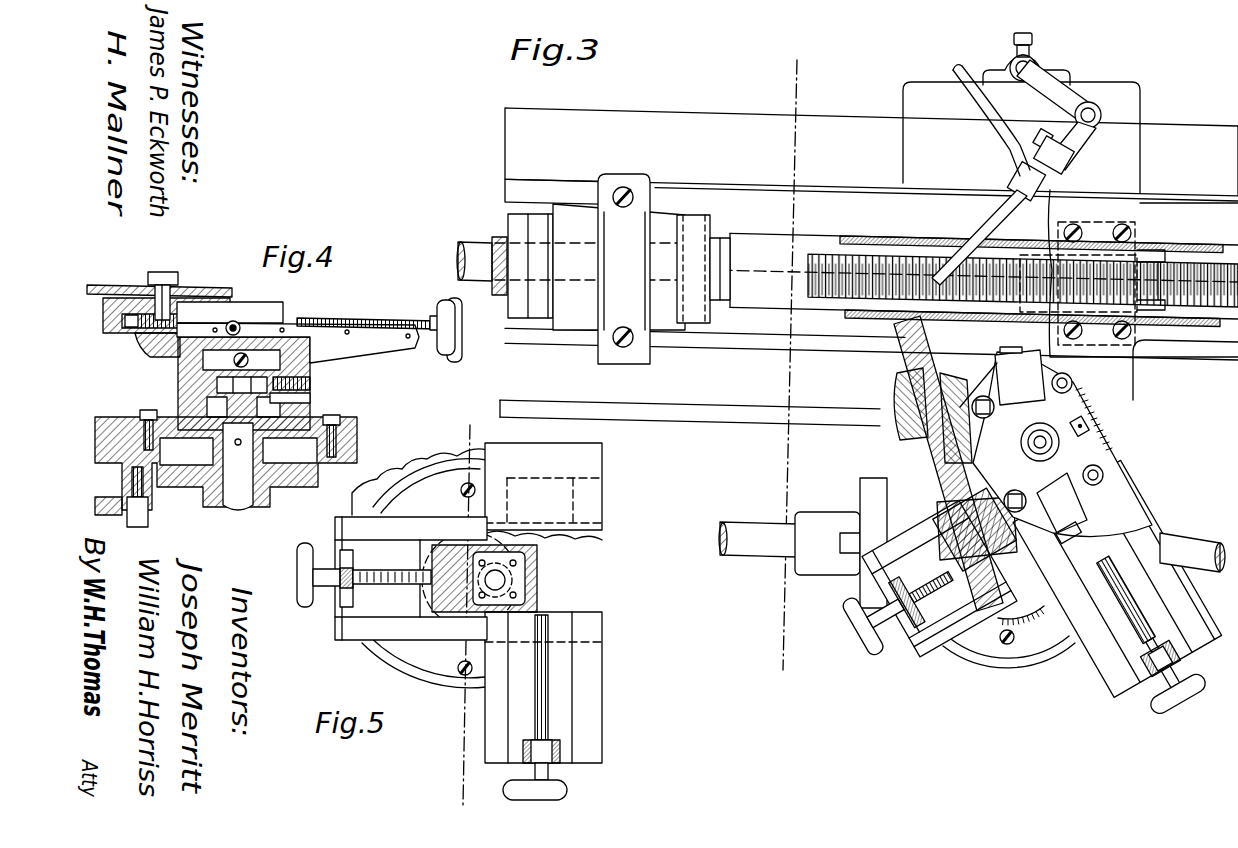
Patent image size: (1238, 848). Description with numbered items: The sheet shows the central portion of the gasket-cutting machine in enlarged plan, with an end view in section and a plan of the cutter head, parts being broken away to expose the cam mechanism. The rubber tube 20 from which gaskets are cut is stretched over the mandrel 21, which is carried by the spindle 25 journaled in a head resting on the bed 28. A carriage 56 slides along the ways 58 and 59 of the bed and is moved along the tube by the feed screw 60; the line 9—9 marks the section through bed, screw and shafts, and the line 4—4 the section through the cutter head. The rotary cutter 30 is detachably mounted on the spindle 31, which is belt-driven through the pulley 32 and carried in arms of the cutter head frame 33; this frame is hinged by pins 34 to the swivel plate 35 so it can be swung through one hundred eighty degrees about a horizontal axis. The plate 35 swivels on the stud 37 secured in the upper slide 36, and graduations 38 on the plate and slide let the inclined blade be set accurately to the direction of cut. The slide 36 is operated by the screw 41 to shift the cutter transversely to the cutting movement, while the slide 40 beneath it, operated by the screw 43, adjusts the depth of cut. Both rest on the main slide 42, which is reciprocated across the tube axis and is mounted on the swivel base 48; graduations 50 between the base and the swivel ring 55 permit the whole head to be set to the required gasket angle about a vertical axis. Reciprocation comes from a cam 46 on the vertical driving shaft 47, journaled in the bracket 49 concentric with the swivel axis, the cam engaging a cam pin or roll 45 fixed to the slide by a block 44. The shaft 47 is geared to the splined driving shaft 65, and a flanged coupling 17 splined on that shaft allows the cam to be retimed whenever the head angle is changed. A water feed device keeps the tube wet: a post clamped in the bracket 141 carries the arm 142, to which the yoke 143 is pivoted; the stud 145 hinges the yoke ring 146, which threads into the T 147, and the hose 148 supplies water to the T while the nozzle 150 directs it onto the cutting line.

In FIG. 3, the section line 9— 9 is at (745, 82).
In FIG. 3, the way 58 is at (871, 156).
In FIG. 3, the way 59 is at (869, 377).
In FIG. 3, the spindle 25 is at (503, 232).
In FIG. 3, the work-supporting spindle or mandrel 21 is at (715, 240).
In FIG. 3, the tube 20 is at (979, 263).
In FIG. 3, the feed screw 60 is at (872, 256).
In FIG. 3, the bed 28 is at (1129, 250).
In FIG. 3, the bracket 141 is at (1060, 78).
In FIG. 3, the arm 142 is at (1070, 93).
In FIG. 3, the yoke 143 is at (1075, 133).
In FIG. 3, the stud 145 is at (1040, 137).
In FIG. 3, the yoke ring 146 is at (1068, 160).
In FIG. 3, the T 147 is at (1035, 175).
In FIG. 3, the hose 148 is at (997, 148).
In FIG. 3, the nozzle 150 is at (985, 220).
In FIG. 3, the splined driving shaft 65 is at (747, 525).
In FIG. 3, the flanged coupling 17 is at (815, 563).
In FIG. 3, the rotary cutter 30 is at (893, 327).
In FIG. 3, the spindle 31 is at (905, 455).
In FIG. 3, the pulley 32 is at (925, 478).
In FIG. 3, the cutter head frame 33 is at (893, 392).
In FIG. 3, the main slide 42 is at (925, 625).
In FIG. 4, the main slide 42 is at (290, 372).
In FIG. 5, the main slide 42 is at (375, 605).
In FIG. 3, the screw 43 is at (867, 622).
In FIG. 4, the screw 43 is at (206, 364).
In FIG. 3, the graduations 50 is at (1025, 622).
In FIG. 3, the swivel ring 55 is at (1040, 628).
In FIG. 4, the swivel ring 55 is at (135, 415).
In FIG. 5, the swivel ring 55 is at (440, 665).
In FIG. 3, the slide 40 is at (1110, 660).
In FIG. 4, the slide 40 is at (298, 342).
In FIG. 5, the slide 40 is at (587, 712).
In FIG. 3, the upper slide 36 is at (1062, 444).
In FIG. 4, the upper slide 36 is at (230, 312).
In FIG. 3, the stud 37 is at (1047, 444).
In FIG. 4, the stud 37 is at (177, 290).
In FIG. 3, the graduations 38 is at (1087, 426).
In FIG. 3, the plate 35 is at (1060, 410).
In FIG. 4, the plate 35 is at (118, 284).
In FIG. 3, the carriage 56 is at (1105, 371).
In FIG. 3, the pins 34 is at (1128, 540).
In FIG. 3, the screw 41 is at (1135, 600).
In FIG. 4, the screw 41 is at (355, 320).
In FIG. 4, the section line 4— 4 is at (465, 416).
In FIG. 5, the section line 4— 4 is at (458, 766).
In FIG. 4, the block 44 is at (220, 385).
In FIG. 5, the block 44 is at (518, 587).
In FIG. 5, the cam pin or roll 45 is at (473, 567).
In FIG. 4, the cam 46 is at (180, 407).
In FIG. 5, the cam 46 is at (425, 593).
In FIG. 4, the vertical driving shaft 47 is at (238, 466).
In FIG. 4, the base 48 is at (300, 402).
In FIG. 4, the bracket 49 is at (193, 490).